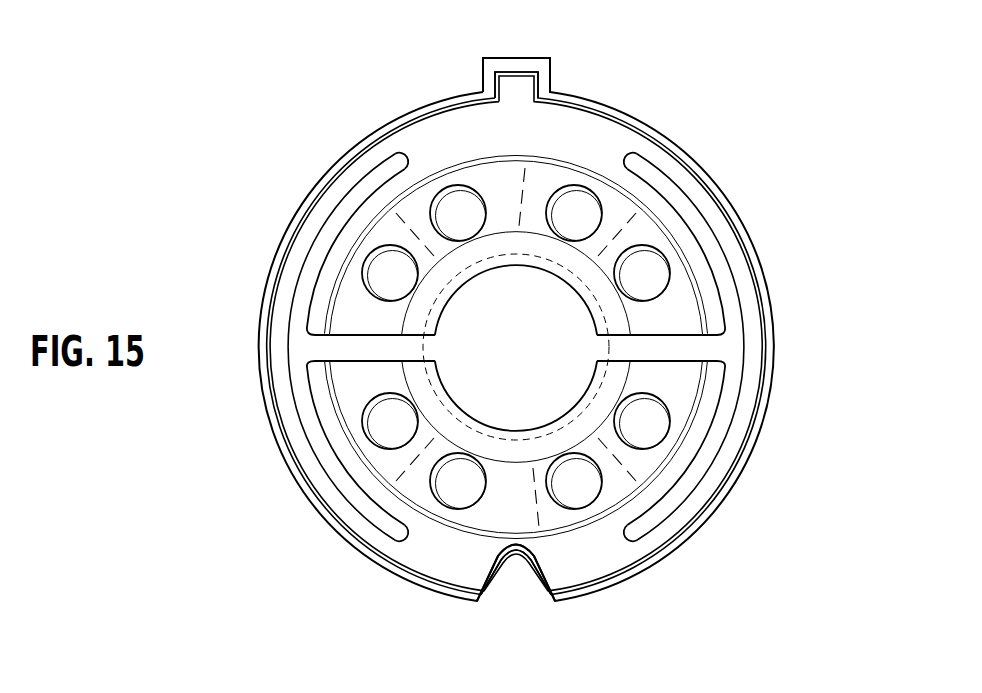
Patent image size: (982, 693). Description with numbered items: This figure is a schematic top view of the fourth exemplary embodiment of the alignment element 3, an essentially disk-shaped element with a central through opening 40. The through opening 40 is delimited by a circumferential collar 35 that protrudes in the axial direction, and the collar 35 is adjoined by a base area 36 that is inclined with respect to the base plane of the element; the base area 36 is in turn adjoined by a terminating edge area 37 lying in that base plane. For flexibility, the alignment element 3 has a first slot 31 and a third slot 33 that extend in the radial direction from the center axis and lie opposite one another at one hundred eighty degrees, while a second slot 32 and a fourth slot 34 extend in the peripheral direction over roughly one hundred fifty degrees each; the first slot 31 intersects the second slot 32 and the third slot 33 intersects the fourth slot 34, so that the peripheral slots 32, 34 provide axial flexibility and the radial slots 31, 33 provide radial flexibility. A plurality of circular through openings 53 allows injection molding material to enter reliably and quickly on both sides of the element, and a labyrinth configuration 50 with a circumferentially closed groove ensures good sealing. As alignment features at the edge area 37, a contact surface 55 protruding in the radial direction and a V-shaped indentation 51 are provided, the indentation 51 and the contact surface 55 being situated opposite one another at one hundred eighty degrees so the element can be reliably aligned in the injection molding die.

The alignment element 3 is at (262, 141).
The first slot 31 is at (352, 345).
The second slot 32 is at (336, 470).
The third slot 33 is at (690, 343).
The fourth slot 34 is at (716, 446).
The circumferential collar 35 is at (588, 273).
The base area 36 is at (498, 190).
The terminating edge area 37 is at (606, 106).
The central through opening 40 is at (522, 438).
The labyrinth configuration 50 is at (750, 247).
The V-shaped indentation 51 is at (490, 592).
The circular through openings 53 is at (584, 484).
The contact surface 55 is at (515, 59).